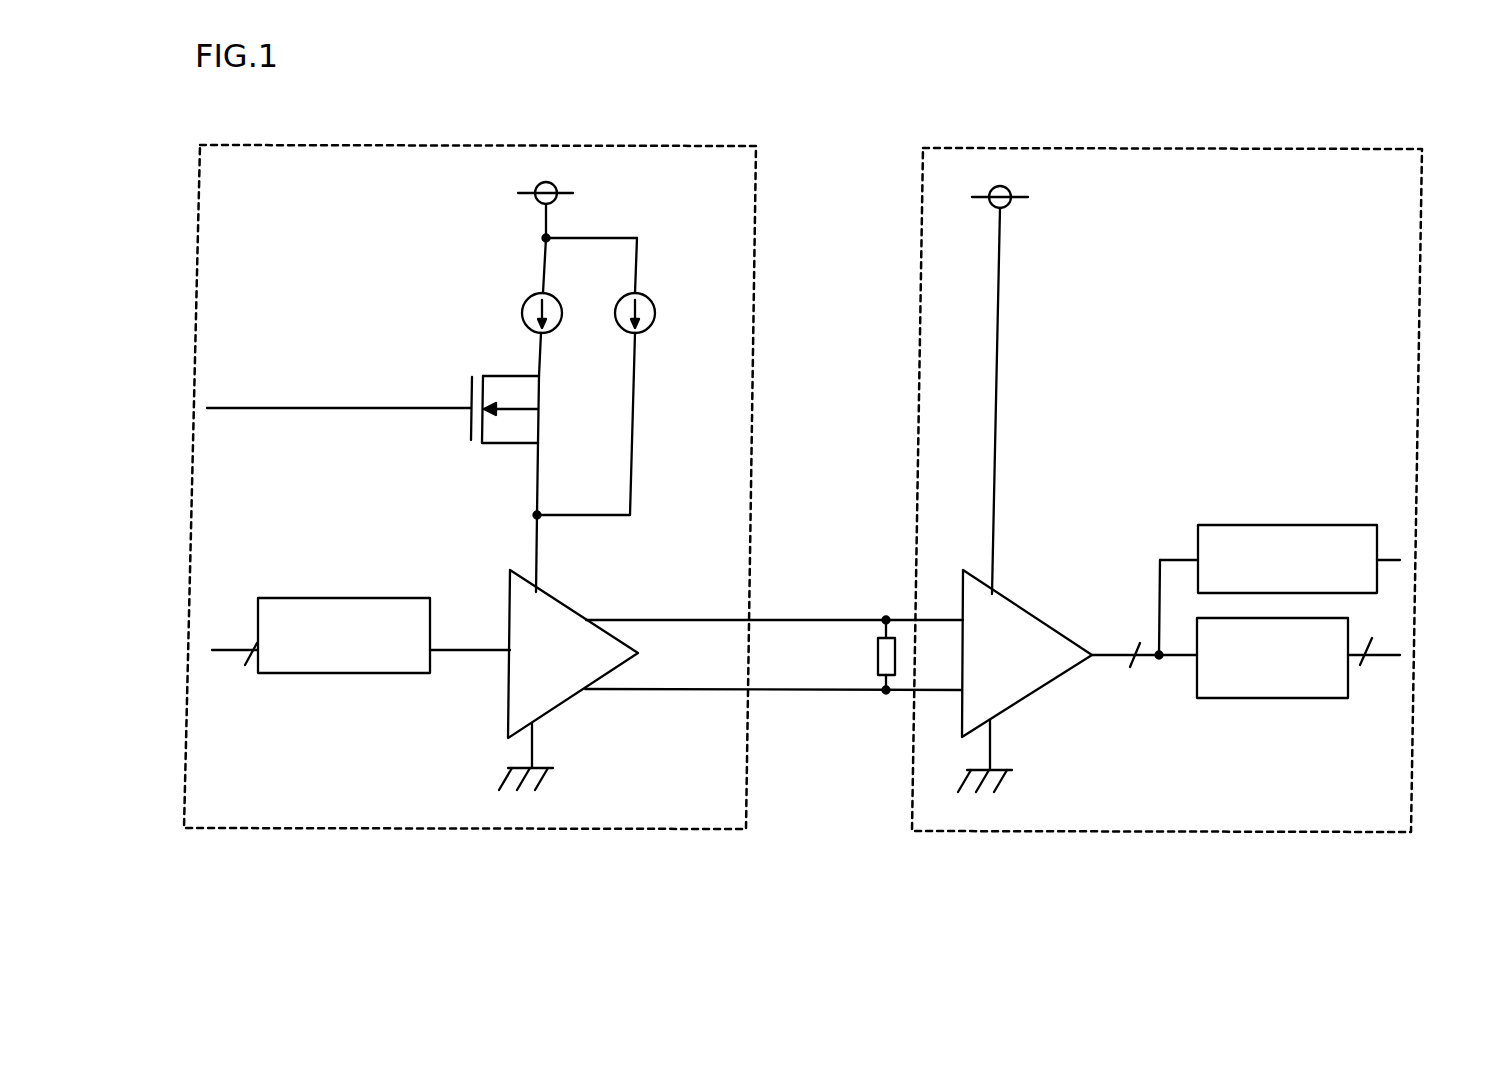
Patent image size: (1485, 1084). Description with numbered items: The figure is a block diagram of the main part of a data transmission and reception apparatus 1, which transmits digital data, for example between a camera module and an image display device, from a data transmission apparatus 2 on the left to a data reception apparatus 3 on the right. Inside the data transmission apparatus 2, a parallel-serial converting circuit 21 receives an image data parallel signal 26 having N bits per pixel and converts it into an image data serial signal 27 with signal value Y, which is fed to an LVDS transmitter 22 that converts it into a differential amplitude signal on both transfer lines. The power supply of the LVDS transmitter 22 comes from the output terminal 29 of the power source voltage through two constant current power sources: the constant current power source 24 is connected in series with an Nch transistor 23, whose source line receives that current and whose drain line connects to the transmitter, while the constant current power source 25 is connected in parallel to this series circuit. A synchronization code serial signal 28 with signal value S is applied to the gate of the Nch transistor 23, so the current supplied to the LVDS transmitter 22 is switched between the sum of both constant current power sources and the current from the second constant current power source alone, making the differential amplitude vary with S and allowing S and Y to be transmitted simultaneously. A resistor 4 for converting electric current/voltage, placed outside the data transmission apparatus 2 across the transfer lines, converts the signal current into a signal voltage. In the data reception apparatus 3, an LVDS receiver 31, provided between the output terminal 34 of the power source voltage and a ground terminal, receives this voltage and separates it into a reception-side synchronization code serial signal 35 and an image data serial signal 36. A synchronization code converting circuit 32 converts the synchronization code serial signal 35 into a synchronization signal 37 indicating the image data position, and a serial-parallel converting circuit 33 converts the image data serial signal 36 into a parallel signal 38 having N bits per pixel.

The data transmission and reception apparatus 1 is at (704, 58).
The data transmission apparatus 2 is at (428, 145).
The data reception apparatus 3 is at (990, 148).
The resistor for converting electric current/voltage 4 is at (878, 637).
The parallel-serial converting circuit 21 is at (349, 674).
The LVDS transmitter 22 is at (510, 575).
The Nch transistor 23 is at (483, 372).
The constant current power source 24 is at (533, 295).
The constant current power source 25 is at (642, 295).
The image data parallel signal 26 is at (235, 650).
The image data serial signal 27 is at (475, 646).
The synchronization code serial signal 28 is at (232, 408).
The output terminal of the power source voltage Vdd 29 is at (597, 238).
The LVDS receiver 31 is at (1030, 610).
The synchronization code converting circuit 32 is at (1272, 524).
The serial-parallel converting circuit 33 is at (1268, 699).
The output terminal of the power source voltage Vdd 34 is at (997, 298).
The reception-side synchronization code serial signal 35 is at (1162, 556).
The image data serial signal 36 is at (1177, 662).
The synchronization signal 37 is at (1388, 558).
The parallel signal 38 is at (1378, 662).